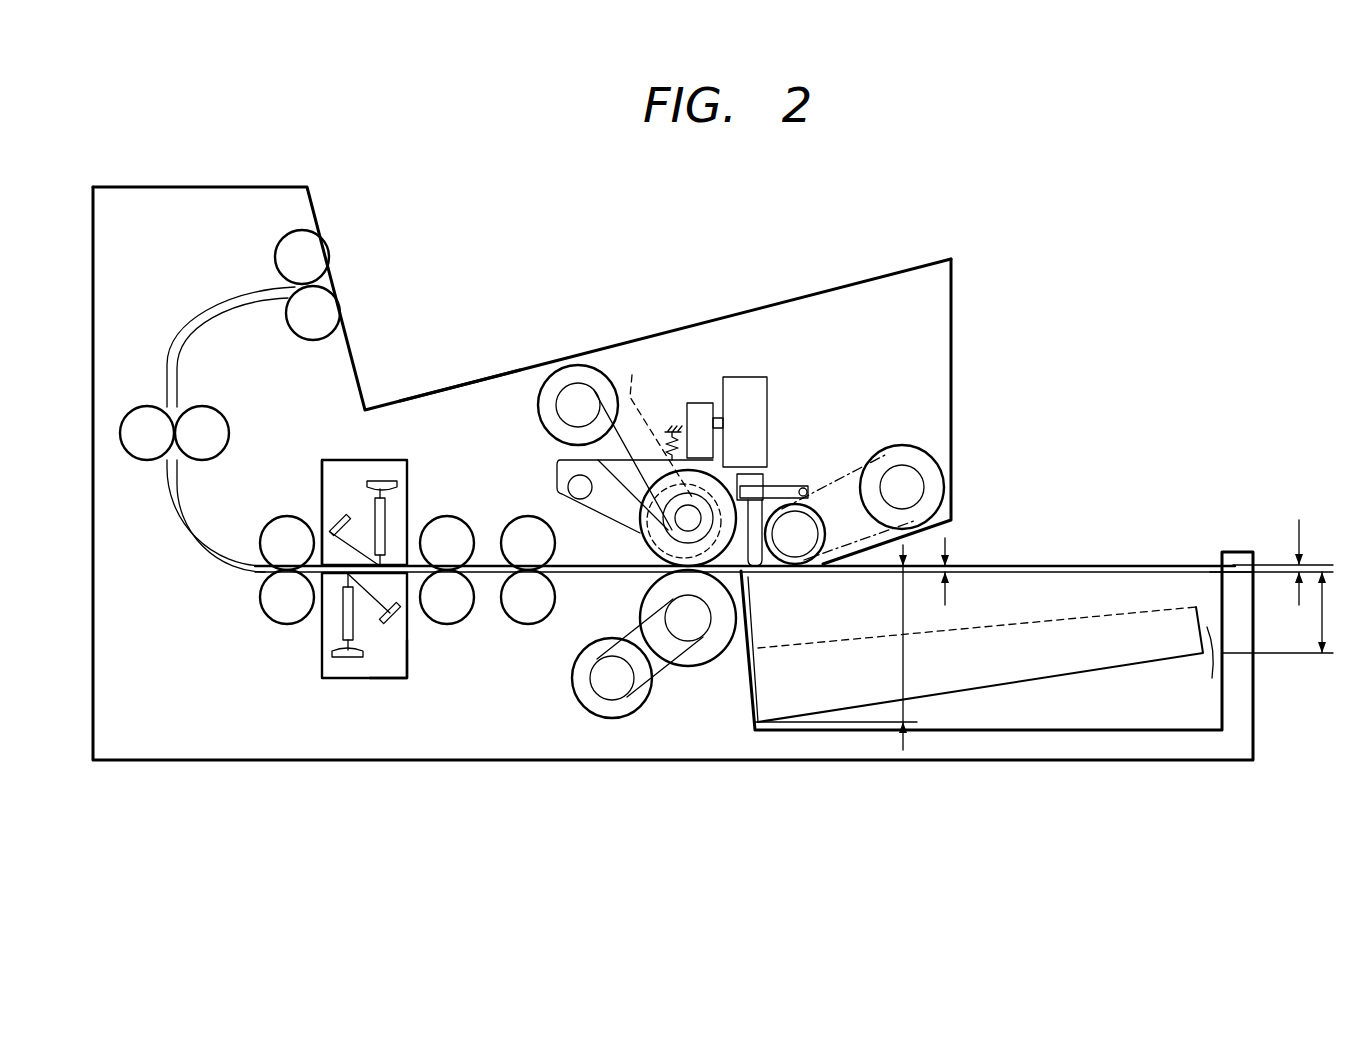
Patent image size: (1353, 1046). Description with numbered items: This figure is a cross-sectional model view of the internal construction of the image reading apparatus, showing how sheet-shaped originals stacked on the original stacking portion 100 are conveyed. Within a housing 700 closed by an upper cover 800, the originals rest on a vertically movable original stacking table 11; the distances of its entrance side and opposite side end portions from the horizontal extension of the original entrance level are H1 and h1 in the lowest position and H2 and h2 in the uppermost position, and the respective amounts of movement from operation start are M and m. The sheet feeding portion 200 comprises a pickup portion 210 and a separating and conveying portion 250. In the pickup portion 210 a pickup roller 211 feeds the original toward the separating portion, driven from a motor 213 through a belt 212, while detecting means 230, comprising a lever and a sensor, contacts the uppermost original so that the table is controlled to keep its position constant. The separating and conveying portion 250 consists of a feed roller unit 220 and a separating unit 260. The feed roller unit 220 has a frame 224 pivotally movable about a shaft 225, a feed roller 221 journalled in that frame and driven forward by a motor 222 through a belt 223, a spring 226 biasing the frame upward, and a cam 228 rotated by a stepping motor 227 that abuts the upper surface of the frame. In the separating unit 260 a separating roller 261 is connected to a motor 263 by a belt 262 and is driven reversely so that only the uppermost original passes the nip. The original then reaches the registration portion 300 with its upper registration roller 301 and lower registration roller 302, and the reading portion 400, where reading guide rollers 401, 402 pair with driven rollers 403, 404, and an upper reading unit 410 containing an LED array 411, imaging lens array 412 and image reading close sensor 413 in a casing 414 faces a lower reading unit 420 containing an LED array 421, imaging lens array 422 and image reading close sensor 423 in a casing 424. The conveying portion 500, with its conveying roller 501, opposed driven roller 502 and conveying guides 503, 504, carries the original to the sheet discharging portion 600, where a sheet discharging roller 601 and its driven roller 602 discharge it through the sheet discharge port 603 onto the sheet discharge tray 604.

The original stacking portion 100 is at (1051, 615).
The original stacking table 11 is at (1036, 565).
The sheet feeding portion 200 is at (711, 433).
The pickup portion 210 is at (859, 466).
The pickup roller 211 is at (810, 507).
The belt 212 is at (832, 470).
The motor 213 is at (904, 446).
The feed roller unit 220 is at (649, 442).
The feed roller 221 is at (646, 543).
The motor 222 is at (548, 423).
The belt 223 is at (643, 438).
The pivotally movable frame 224 is at (620, 527).
The shaft 225 is at (568, 487).
The spring 226 is at (671, 440).
The stepping motor 227 is at (748, 377).
The cam 228 is at (700, 403).
The detecting means 230 is at (772, 478).
The separating and conveying portion 250 is at (647, 665).
The separating unit 260 is at (647, 665).
The separating roller 261 is at (710, 660).
The belt 262 is at (632, 612).
The motor 263 is at (600, 714).
The registration portion 300 is at (525, 598).
The upper registration roller 301 is at (521, 533).
The lower registration roller 302 is at (540, 621).
The reading portion 400 is at (368, 581).
The reading guide roller 401 is at (466, 616).
The reading guide roller 402 is at (268, 616).
The driven roller 403 is at (449, 517).
The driven roller 404 is at (272, 520).
The upper reading unit 410 is at (353, 486).
The LED array 411 is at (330, 520).
The imaging lens array 412 is at (387, 520).
The image reading close sensor 413 is at (398, 483).
The casing 414 is at (330, 460).
The lower reading unit 420 is at (362, 652).
The LED array 421 is at (400, 620).
The imaging lens array 422 is at (340, 638).
The image reading close sensor 423 is at (348, 660).
The casing 424 is at (403, 679).
The conveying portion 500 is at (197, 520).
The conveying roller 501 is at (147, 458).
The driven roller 502 is at (224, 422).
The conveying guide 503 is at (184, 543).
The conveying guide 504 is at (185, 513).
The sheet discharging portion 600 is at (284, 268).
The sheet discharging roller 601 is at (306, 331).
The driven roller 602 is at (278, 257).
The sheet discharge port 603 is at (300, 297).
The sheet discharge tray 604 is at (460, 384).
The housing 700 is at (528, 765).
The upper cover 800 is at (758, 262).
The amount of movement m is at (1212, 672).
The amount of movement M is at (755, 652).
The distance H1 is at (918, 647).
The distance H2 is at (963, 575).
The distance h1 is at (1285, 612).
The distance h2 is at (1271, 562).